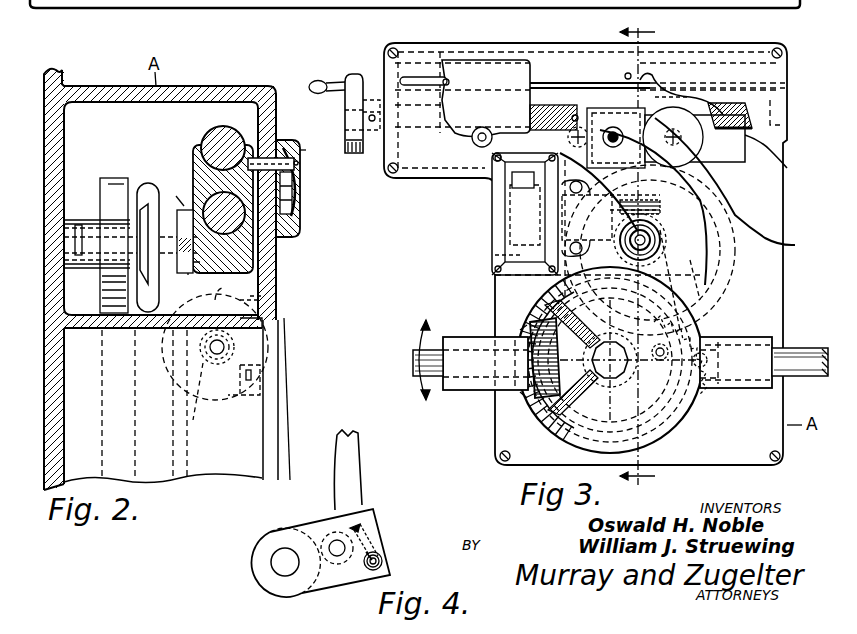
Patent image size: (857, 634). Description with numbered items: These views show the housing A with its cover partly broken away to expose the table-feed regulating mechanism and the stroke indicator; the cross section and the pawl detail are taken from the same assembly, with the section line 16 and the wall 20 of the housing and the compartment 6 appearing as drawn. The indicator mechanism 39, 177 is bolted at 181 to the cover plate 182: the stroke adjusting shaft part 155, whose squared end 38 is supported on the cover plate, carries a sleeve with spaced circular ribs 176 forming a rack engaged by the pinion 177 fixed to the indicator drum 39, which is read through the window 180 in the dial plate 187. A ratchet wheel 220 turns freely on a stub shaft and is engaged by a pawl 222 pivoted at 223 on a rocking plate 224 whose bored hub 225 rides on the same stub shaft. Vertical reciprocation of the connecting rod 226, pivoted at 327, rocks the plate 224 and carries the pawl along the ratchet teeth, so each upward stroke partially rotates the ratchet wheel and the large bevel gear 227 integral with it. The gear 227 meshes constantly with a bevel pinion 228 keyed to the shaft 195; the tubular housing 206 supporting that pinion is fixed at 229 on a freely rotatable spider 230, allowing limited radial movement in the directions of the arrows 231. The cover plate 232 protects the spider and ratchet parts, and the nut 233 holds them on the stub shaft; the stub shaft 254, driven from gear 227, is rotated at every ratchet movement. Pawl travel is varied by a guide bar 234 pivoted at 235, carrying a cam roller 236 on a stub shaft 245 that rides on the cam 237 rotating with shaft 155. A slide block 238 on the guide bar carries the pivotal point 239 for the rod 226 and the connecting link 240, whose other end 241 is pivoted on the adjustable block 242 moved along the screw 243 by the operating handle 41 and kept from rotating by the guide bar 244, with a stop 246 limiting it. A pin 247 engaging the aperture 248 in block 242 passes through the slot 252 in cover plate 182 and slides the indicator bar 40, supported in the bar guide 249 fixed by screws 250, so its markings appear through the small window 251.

In FIG. 2, the housing wall 20 is at (66, 80).
In FIG. 2, the operating handle 41 is at (321, 76).
In FIG. 2, the cover plate 182 is at (280, 112).
In FIG. 3, the cover plate 182 is at (786, 312).
In FIG. 2, the pin 247 is at (290, 150).
In FIG. 2, the guide bar 244 is at (214, 136).
In FIG. 3, the guide bar 244 is at (688, 92).
In FIG. 2, the aperture 248 is at (296, 210).
In FIG. 3, the aperture 248 is at (447, 78).
In FIG. 2, the longitudinally adjustable block 242 is at (198, 160).
In FIG. 3, the longitudinally adjustable block 242 is at (525, 74).
In FIG. 2, the indicator bar 40 is at (302, 152).
In FIG. 2, the window 251 is at (300, 164).
In FIG. 2, the longitudinal horizontal slot 252 is at (296, 186).
In FIG. 3, the longitudinal horizontal slot 252 is at (418, 78).
In FIG. 2, the bar guide 249 is at (296, 228).
In FIG. 2, the screws 250 is at (300, 250).
In FIG. 2, the cam roller 236 is at (104, 182).
In FIG. 3, the cam roller 236 is at (716, 166).
In FIG. 2, the guide bar 234 is at (142, 206).
In FIG. 3, the guide bar 234 is at (742, 158).
In FIG. 2, the slide block 238 is at (150, 184).
In FIG. 3, the slide block 238 is at (600, 108).
In FIG. 2, the stub shaft 245 is at (108, 218).
In FIG. 3, the stub shaft 245 is at (681, 137).
In FIG. 2, the screw 243 is at (174, 194).
In FIG. 3, the screw 243 is at (778, 102).
In FIG. 2, the pivotal point 239 is at (182, 212).
In FIG. 3, the pivotal point 239 is at (616, 126).
In FIG. 2, the pivot 235 is at (96, 258).
In FIG. 3, the pivot 235 is at (574, 116).
In FIG. 2, the connecting link 240 is at (190, 274).
In FIG. 3, the connecting link 240 is at (494, 162).
In FIG. 2, the pivot end of link 241 is at (232, 275).
In FIG. 3, the pivot end of link 241 is at (478, 146).
In FIG. 2, the window 180 is at (282, 302).
In FIG. 3, the window 180 is at (512, 183).
In FIG. 2, the dial plate 187 is at (284, 330).
In FIG. 3, the dial plate 187 is at (494, 274).
In FIG. 2, the indicator drum 39 is at (286, 372).
In FIG. 2, the cam 237 is at (98, 366).
In FIG. 3, the cam 237 is at (722, 204).
In FIG. 2, the connecting rod 226 is at (172, 400).
In FIG. 3, the connecting rod 226 is at (720, 300).
In FIG. 4, the connecting rod 226 is at (356, 478).
In FIG. 2, the pinion 177 is at (207, 365).
In FIG. 3, the pinion 177 is at (660, 232).
In FIG. 2, the bolt mounting 181 is at (242, 396).
In FIG. 3, the bolt mounting 181 is at (496, 255).
In FIG. 3, the section line 16 is at (651, 254).
In FIG. 3, the stop 246 is at (633, 76).
In FIG. 3, the switch 6 is at (523, 181).
In FIG. 3, the circular ribs 176 is at (662, 244).
In FIG. 3, the stroke adjusting shaft part 155 is at (668, 254).
In FIG. 3, the squared end of shaft 38 is at (648, 252).
In FIG. 3, the pawl 222 is at (718, 318).
In FIG. 4, the pawl 222 is at (363, 528).
In FIG. 3, the rocking plate 224 is at (720, 332).
In FIG. 4, the rocking plate 224 is at (380, 562).
In FIG. 3, the arrows 231 is at (420, 398).
In FIG. 3, the shaft 195 is at (414, 362).
In FIG. 3, the spider 230 is at (565, 357).
In FIG. 3, the tubular housing 206 is at (474, 392).
In FIG. 3, the fixed mounting 229 is at (535, 400).
In FIG. 3, the bevel pinion 228 is at (545, 400).
In FIG. 3, the large bevel gear 227 is at (582, 418).
In FIG. 3, the nut 233 is at (606, 380).
In FIG. 3, the pivot 327 is at (660, 362).
In FIG. 4, the pivot 327 is at (334, 540).
In FIG. 3, the cover plate 232 is at (668, 440).
In FIG. 3, the ratchet wheel 220 is at (708, 404).
In FIG. 3, the pivotal mounting of pawl 223 is at (712, 384).
In FIG. 4, the pivotal mounting of pawl 223 is at (371, 568).
In FIG. 3, the stub shaft 254 is at (810, 378).
In FIG. 4, the bored hub 225 is at (320, 588).